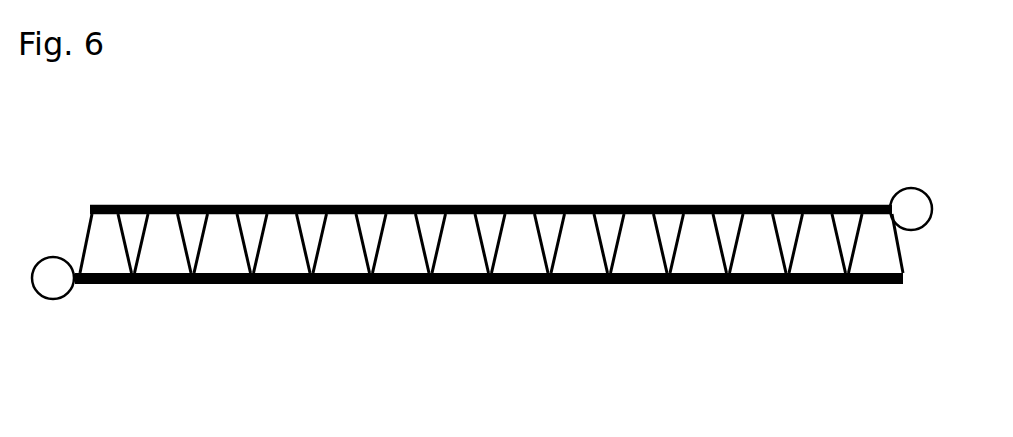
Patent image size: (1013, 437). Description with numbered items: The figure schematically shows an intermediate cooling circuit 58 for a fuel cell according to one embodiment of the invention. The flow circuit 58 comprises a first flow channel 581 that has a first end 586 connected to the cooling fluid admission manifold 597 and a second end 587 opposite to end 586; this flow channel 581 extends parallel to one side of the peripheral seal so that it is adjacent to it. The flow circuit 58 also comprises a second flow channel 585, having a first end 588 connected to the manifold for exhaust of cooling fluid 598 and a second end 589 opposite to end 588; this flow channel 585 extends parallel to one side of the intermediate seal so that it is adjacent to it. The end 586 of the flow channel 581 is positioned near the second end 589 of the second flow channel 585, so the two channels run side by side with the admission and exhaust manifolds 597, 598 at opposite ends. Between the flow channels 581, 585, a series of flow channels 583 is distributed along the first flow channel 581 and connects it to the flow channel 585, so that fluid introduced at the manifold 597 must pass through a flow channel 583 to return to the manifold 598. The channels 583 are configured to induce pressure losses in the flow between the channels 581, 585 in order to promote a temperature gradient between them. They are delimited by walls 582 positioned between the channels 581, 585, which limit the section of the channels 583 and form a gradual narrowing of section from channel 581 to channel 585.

The intermediate cooling circuit 58 is at (465, 180).
The flow channel 581 is at (563, 205).
The walls 582 is at (342, 238).
The flow channels 583 is at (253, 238).
The flow channel 585 is at (328, 284).
The first end 586 is at (880, 205).
The second end 587 is at (103, 205).
The first end 588 is at (80, 284).
The second end 589 is at (842, 285).
The cooling fluid admission manifold 597 is at (912, 188).
The manifold for exhaust of cooling fluid 598 is at (53, 300).